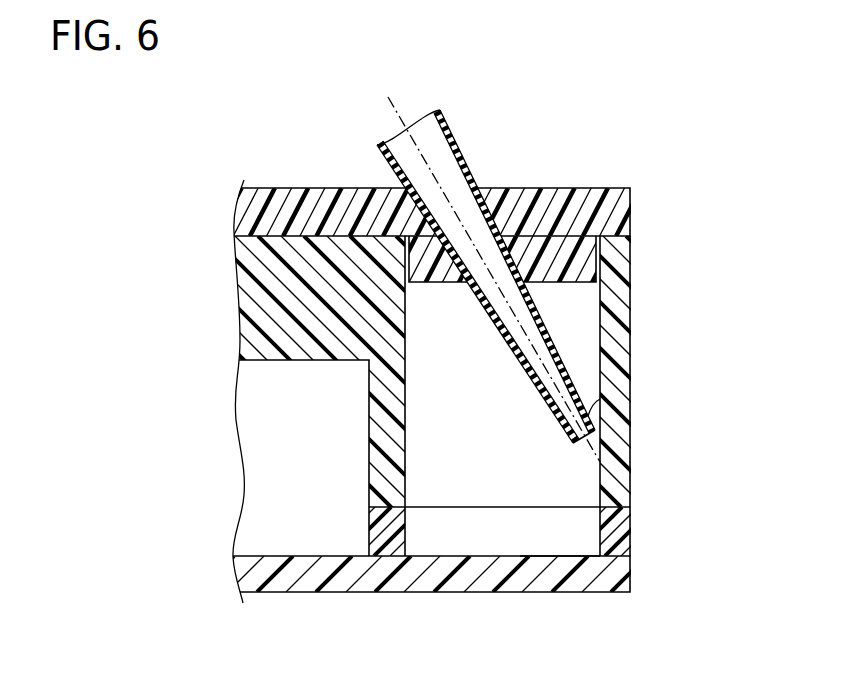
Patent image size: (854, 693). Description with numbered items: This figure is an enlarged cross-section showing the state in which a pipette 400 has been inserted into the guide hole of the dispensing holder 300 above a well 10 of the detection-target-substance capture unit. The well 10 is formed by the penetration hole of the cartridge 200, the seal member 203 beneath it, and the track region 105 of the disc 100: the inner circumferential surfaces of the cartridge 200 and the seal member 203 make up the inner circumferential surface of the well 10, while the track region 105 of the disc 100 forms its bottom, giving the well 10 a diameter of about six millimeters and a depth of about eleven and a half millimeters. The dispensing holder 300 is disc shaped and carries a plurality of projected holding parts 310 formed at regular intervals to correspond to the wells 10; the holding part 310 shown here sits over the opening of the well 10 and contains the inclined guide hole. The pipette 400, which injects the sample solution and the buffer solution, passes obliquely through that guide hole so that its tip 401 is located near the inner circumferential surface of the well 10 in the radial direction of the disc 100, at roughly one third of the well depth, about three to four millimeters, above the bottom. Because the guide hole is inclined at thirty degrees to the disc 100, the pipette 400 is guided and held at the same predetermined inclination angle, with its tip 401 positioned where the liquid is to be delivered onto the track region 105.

The well 10 is at (402, 458).
The disc 100 is at (627, 583).
The track region 105 is at (540, 557).
The cartridge 200 is at (622, 343).
The seal member 203 is at (625, 525).
The dispensing holder 300 is at (622, 206).
The holding part 310 is at (583, 296).
The pipette 400 is at (455, 142).
The tip 401 is at (581, 444).